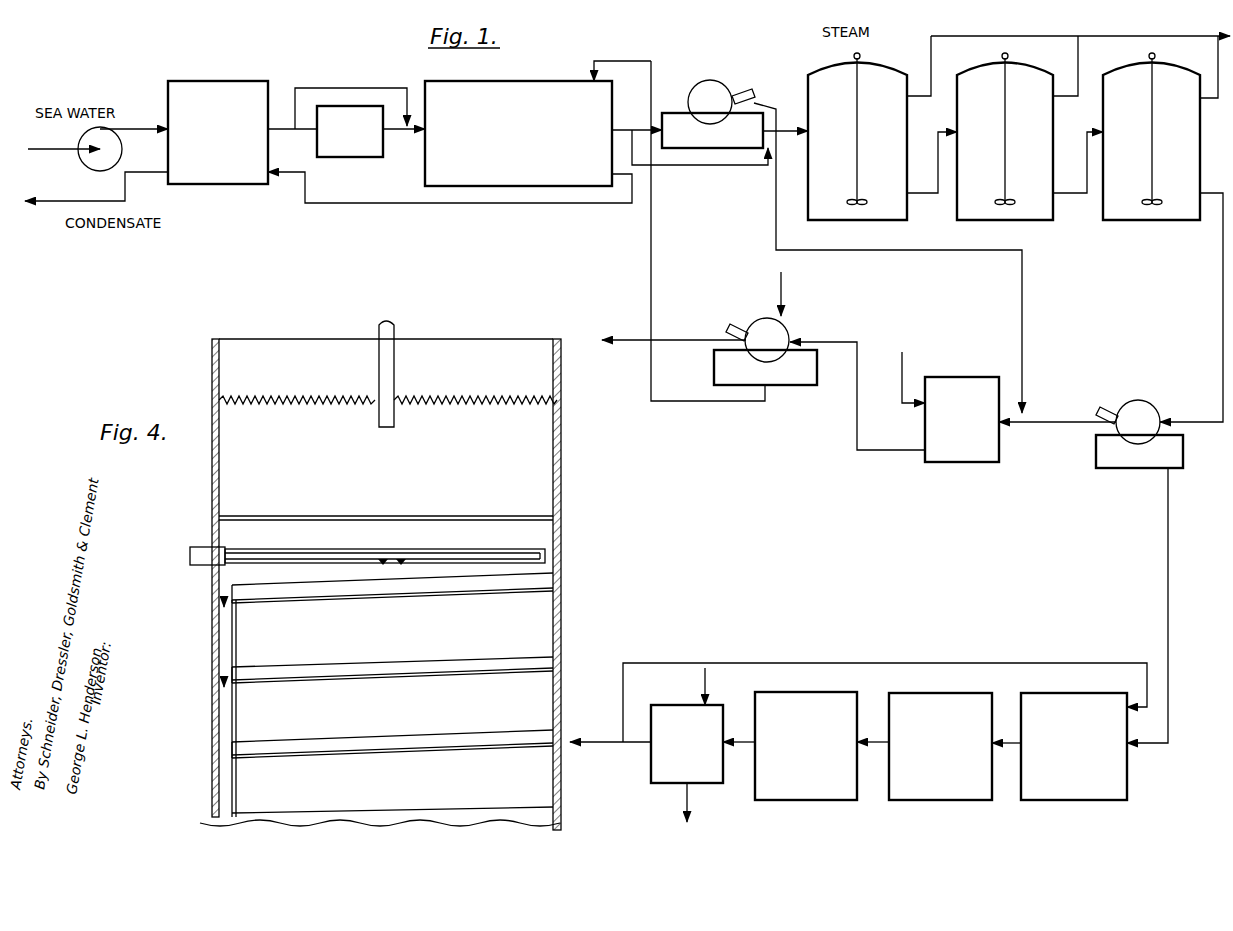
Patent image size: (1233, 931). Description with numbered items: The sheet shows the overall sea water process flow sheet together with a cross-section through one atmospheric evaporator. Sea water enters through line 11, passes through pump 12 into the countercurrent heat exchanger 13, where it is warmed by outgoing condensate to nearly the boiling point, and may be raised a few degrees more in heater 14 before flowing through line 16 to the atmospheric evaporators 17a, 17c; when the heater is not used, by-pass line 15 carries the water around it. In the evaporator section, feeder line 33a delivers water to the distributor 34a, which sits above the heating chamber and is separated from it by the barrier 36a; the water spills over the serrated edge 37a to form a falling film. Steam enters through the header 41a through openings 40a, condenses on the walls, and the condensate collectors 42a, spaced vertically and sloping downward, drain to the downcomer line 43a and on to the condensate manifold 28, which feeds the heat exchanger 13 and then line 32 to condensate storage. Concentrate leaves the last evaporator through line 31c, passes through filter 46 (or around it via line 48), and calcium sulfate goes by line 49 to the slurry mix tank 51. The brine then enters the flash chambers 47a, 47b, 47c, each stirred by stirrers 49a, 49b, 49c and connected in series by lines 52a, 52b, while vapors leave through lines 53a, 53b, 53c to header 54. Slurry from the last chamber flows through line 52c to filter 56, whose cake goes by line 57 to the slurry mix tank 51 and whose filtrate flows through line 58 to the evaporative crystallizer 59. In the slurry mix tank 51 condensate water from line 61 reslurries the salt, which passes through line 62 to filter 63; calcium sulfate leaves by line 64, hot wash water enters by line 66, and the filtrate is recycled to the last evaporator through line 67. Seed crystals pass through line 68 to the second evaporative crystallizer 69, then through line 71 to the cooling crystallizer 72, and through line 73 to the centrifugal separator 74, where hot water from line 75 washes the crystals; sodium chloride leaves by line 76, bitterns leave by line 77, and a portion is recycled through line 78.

In FIG. 1, the line 11 is at (55, 150).
In FIG. 1, the pump 12 is at (119, 157).
In FIG. 1, the countercurrent heat exchanger 13 is at (228, 66).
In FIG. 1, the heater 14 is at (358, 157).
In FIG. 1, the by-pass line 15 is at (380, 66).
In FIG. 1, the line 16 is at (402, 134).
In FIG. 1, the atmospheric evaporator 17a is at (538, 120).
In FIG. 1, the atmospheric evaporator 17c is at (538, 120).
In FIG. 1, the condensate manifold 28 is at (470, 204).
In FIG. 1, the line 31c is at (624, 128).
In FIG. 1, the line 32 is at (125, 196).
In FIG. 1, the filter 46 is at (737, 148).
In FIG. 1, the line 48 is at (697, 165).
In FIG. 1, the line 49 is at (890, 255).
In FIG. 1, the flash chamber 47a is at (882, 222).
In FIG. 1, the flash chamber 47b is at (1010, 222).
In FIG. 1, the flash chamber 47c is at (1140, 222).
In FIG. 1, the stirrer 49a is at (858, 152).
In FIG. 1, the stirrer 49b is at (1006, 152).
In FIG. 1, the stirrer 49c is at (1153, 152).
In FIG. 1, the slurry mix tank 51 is at (999, 445).
In FIG. 1, the line 52a is at (925, 195).
In FIG. 1, the line 52b is at (1078, 195).
In FIG. 1, the line 52c is at (1223, 273).
In FIG. 1, the line 53a is at (930, 60).
In FIG. 1, the line 53b is at (1078, 60).
In FIG. 1, the line 53c is at (1218, 60).
In FIG. 1, the header 54 is at (963, 38).
In FIG. 1, the filter 56 is at (1140, 468).
In FIG. 1, the line 57 is at (1060, 420).
In FIG. 1, the line 58 is at (1168, 568).
In FIG. 1, the evaporative crystallizer 59 is at (1127, 778).
In FIG. 1, the line 61 is at (902, 353).
In FIG. 1, the line 62 is at (857, 403).
In FIG. 1, the filter 63 is at (793, 385).
In FIG. 1, the line 64 is at (630, 338).
In FIG. 1, the line 66 is at (786, 290).
In FIG. 1, the line 67 is at (650, 251).
In FIG. 1, the line 68 is at (1005, 740).
In FIG. 1, the evaporative crystallizer 69 is at (975, 800).
In FIG. 1, the line 71 is at (875, 740).
In FIG. 1, the evaporative crystallizer 72 is at (855, 798).
In FIG. 1, the line 73 is at (740, 740).
In FIG. 1, the centrifugal separator 74 is at (651, 780).
In FIG. 1, the line 75 is at (706, 679).
In FIG. 1, the line 76 is at (698, 800).
In FIG. 1, the line 77 is at (598, 740).
In FIG. 1, the line 78 is at (885, 645).
In FIG. 4, the feeder line 33a is at (394, 325).
In FIG. 4, the distributor 34a is at (470, 479).
In FIG. 4, the barrier 36a is at (383, 515).
In FIG. 4, the serrated edge 37a is at (487, 398).
In FIG. 4, the openings 40a is at (400, 556).
In FIG. 4, the header 41a is at (486, 552).
In FIG. 4, the condensate collector 42a is at (392, 645).
In FIG. 4, the downcomer line 43a is at (219, 650).